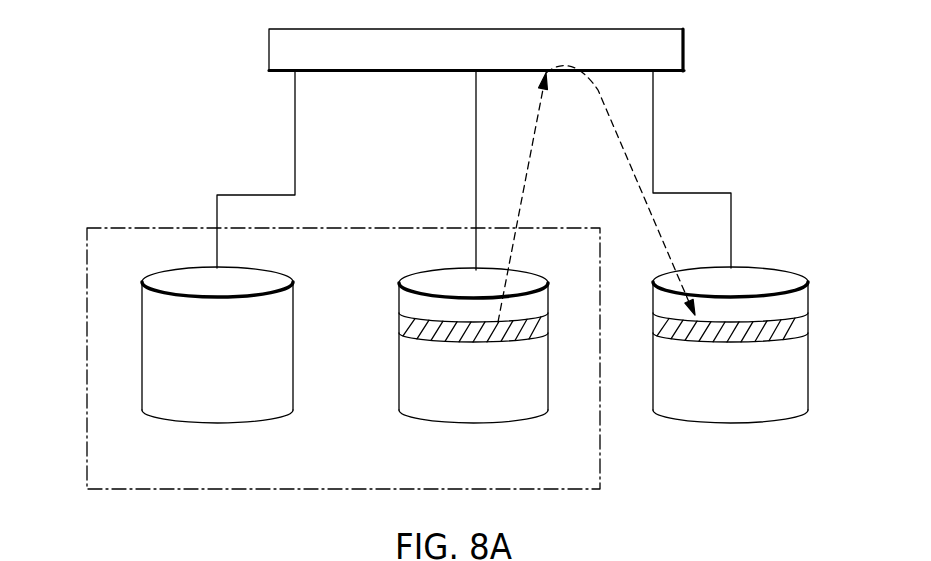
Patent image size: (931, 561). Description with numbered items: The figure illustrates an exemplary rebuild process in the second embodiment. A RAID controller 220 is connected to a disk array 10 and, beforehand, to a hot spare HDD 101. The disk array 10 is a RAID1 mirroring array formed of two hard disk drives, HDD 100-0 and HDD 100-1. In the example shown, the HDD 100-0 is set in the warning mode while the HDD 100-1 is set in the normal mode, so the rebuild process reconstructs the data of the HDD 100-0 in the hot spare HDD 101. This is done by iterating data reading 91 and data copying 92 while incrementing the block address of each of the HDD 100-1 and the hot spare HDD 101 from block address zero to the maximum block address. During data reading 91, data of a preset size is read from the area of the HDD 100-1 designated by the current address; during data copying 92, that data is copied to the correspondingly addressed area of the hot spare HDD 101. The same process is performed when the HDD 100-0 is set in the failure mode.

The RAID controller 220 is at (268, 48).
The disk array 10 is at (128, 226).
The HDD 100-0 is at (258, 413).
The HDD 100-1 is at (505, 413).
The hot spare HDD 101 is at (738, 413).
The data reading 91 is at (534, 131).
The data copying 92 is at (634, 161).